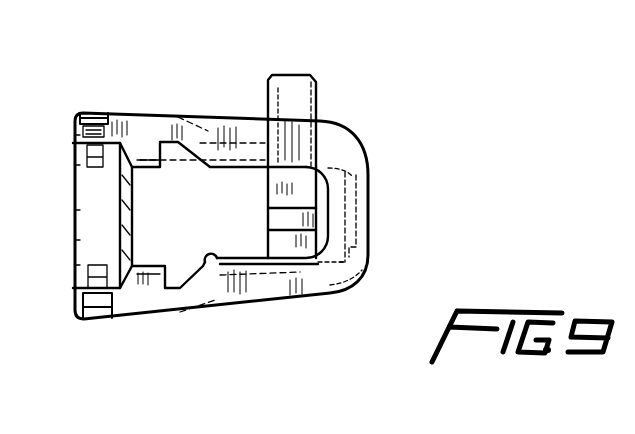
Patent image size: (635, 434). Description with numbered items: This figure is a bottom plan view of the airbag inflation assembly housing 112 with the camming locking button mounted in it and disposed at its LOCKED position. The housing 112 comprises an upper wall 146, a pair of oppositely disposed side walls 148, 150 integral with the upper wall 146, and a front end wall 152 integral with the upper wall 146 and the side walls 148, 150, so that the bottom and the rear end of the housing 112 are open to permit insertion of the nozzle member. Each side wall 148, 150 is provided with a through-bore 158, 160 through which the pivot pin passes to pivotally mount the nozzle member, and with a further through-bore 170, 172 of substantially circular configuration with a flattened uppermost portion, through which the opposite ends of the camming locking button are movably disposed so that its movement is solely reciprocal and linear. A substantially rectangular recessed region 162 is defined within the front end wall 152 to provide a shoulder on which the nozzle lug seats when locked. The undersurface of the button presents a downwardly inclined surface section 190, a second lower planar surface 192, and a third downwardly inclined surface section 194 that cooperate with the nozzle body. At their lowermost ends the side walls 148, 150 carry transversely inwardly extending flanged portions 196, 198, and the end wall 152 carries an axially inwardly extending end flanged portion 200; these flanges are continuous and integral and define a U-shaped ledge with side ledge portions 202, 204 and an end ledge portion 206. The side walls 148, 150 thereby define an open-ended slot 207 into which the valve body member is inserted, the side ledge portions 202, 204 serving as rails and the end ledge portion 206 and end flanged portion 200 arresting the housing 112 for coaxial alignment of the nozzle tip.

The airbag inflation assembly housing 112 is at (237, 113).
The upper wall 146 is at (140, 185).
The side wall 148 is at (149, 128).
The side wall 150 is at (145, 303).
The front end wall 152 is at (370, 262).
The through-bore 158 is at (99, 113).
The through-bore 160 is at (86, 322).
The recessed region 162 is at (356, 190).
The through-bore 170 is at (297, 150).
The through-bore 172 is at (314, 272).
The downwardly inclined surface section 190 is at (322, 178).
The second lower planar surface 192 is at (268, 210).
The third downwardly inclined surface section 194 is at (309, 270).
The flanged portion 196 is at (207, 183).
The flanged portion 198 is at (206, 264).
The end flanged portion 200 is at (368, 162).
The side ledge portion 202 is at (253, 168).
The side ledge portion 204 is at (270, 262).
The end ledge portion 206 is at (368, 224).
The open-ended slot 207 is at (135, 222).